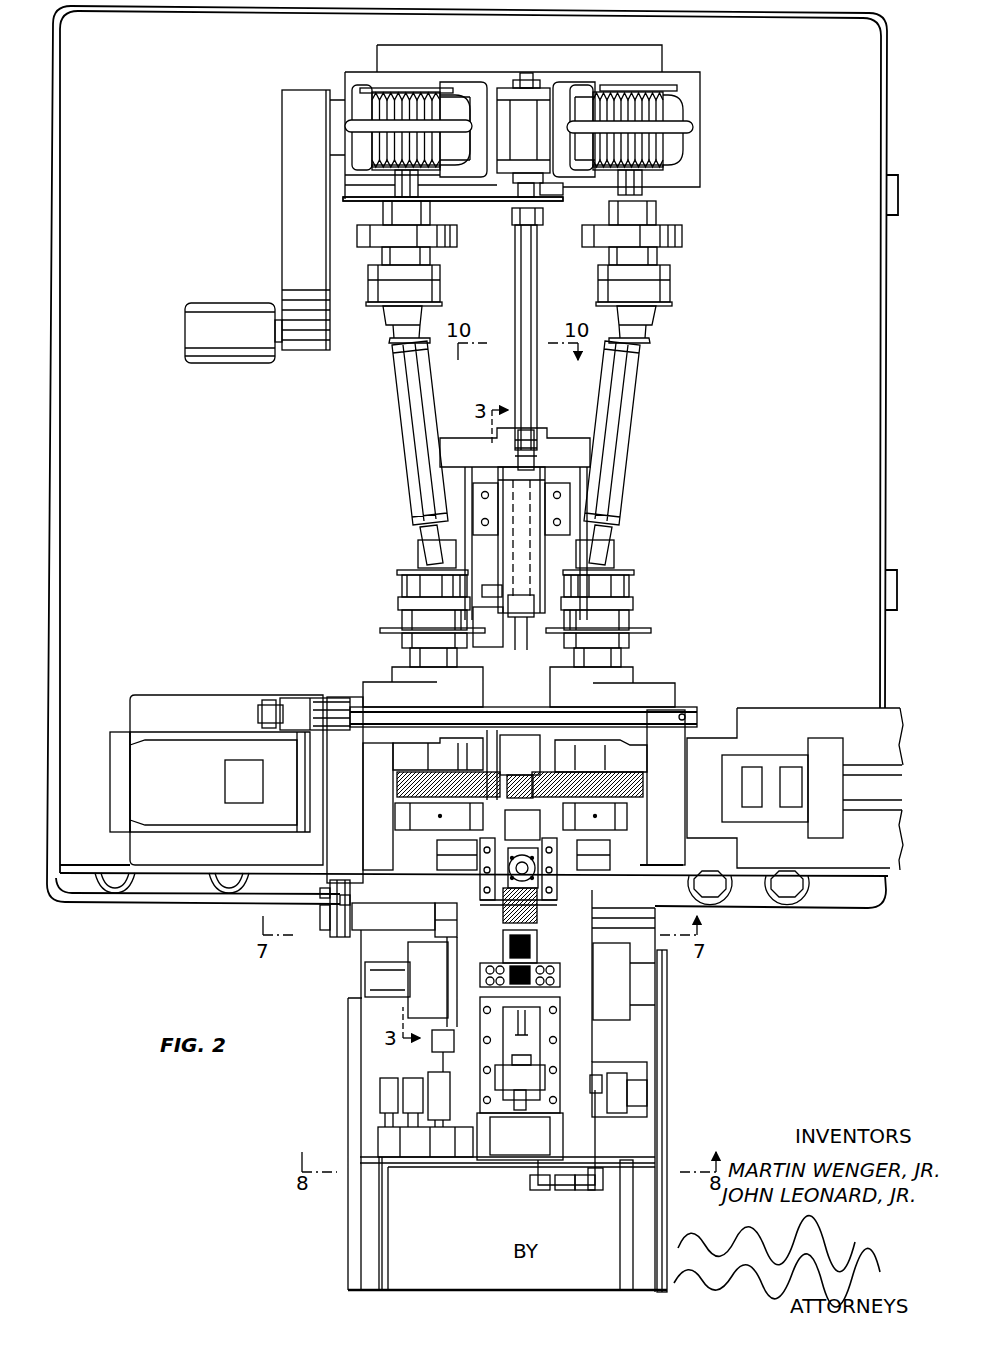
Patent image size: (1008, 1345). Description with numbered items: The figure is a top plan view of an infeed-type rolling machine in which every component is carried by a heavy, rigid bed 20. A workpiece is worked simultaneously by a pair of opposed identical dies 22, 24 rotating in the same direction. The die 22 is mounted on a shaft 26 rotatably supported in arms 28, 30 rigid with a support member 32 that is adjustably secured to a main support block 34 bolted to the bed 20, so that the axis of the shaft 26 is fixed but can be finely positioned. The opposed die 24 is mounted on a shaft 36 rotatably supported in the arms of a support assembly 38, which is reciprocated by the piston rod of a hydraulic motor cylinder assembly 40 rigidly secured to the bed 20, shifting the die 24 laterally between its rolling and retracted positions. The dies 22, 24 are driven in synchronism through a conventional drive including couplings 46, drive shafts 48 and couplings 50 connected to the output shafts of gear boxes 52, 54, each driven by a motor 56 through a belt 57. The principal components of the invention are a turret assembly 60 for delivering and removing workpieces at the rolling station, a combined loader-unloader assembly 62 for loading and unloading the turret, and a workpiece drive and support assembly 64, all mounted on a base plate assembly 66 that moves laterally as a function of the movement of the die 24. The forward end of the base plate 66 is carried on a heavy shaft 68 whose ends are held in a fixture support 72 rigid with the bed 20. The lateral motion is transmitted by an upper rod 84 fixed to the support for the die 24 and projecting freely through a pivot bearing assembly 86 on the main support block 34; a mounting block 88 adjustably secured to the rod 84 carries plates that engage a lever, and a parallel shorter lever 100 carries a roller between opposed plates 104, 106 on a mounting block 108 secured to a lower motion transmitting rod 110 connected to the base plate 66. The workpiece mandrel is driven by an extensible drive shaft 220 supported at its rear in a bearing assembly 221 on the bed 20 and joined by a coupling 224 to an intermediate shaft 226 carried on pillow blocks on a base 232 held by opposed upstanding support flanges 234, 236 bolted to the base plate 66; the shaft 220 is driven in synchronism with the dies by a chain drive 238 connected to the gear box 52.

The bed 20 is at (65, 902).
The die 22 is at (400, 772).
The die 24 is at (632, 772).
The shaft 26 is at (413, 663).
The arm 28 is at (370, 682).
The arm 30 is at (403, 832).
The support member 32 is at (362, 748).
The main support block 34 is at (143, 740).
The shaft 36 is at (614, 660).
The support assembly 38 is at (676, 683).
The hydraulic motor cylinder assembly 40 is at (808, 740).
The couplings 46 is at (400, 587).
The drive shaft 48 is at (398, 412).
The couplings 50 is at (670, 262).
The gear box 52 is at (420, 83).
The gear box 54 is at (663, 87).
The motor 56 is at (222, 303).
The belt 57 is at (282, 164).
The turret assembly 60 is at (540, 912).
The loader-unloader assembly 62 is at (566, 1005).
The workpiece drive and support assembly 64 is at (497, 618).
The base plate assembly 66 is at (595, 1043).
The shaft 68 is at (348, 1012).
The fixture support 72 is at (660, 1033).
The upper rod 84 is at (583, 714).
The pivot bearing assembly 86 is at (277, 700).
The mounting block 88 is at (322, 698).
The lever 100 is at (348, 888).
The plate 104 is at (325, 933).
The plate 106 is at (347, 935).
The mounting block 108 is at (322, 895).
The lower motion transmitting rod 110 is at (398, 930).
The extensible drive shaft 220 is at (512, 372).
The bearing assembly 221 is at (543, 215).
The coupling 224 is at (530, 435).
The intermediate shaft 226 is at (530, 545).
The base 232 is at (535, 492).
The support flange 234 is at (567, 483).
The support flange 236 is at (487, 483).
The chain drive 238 is at (460, 203).